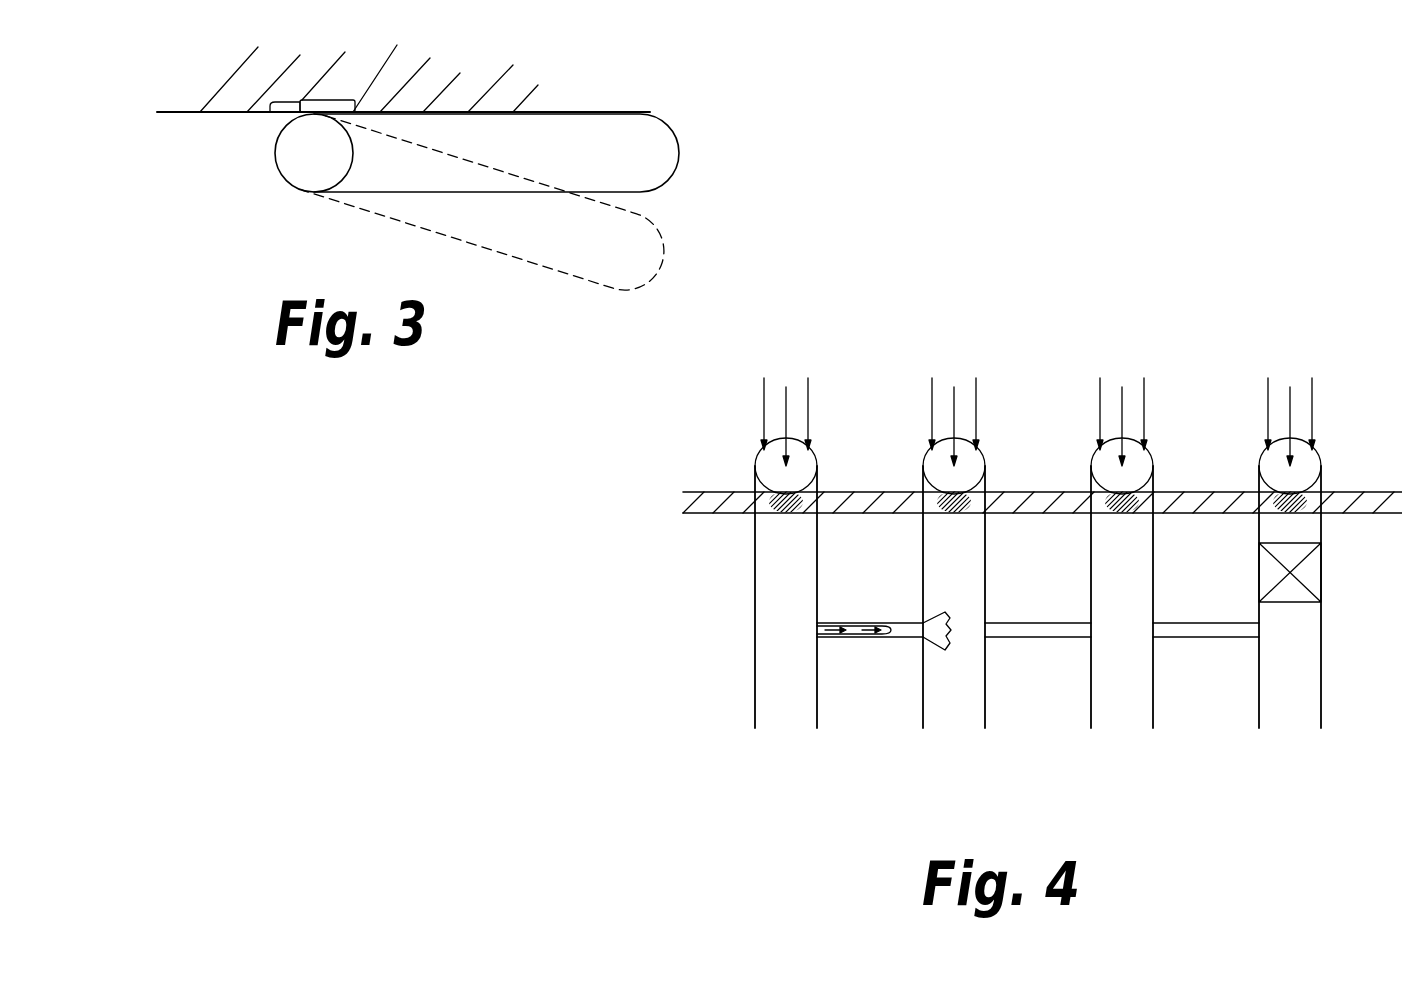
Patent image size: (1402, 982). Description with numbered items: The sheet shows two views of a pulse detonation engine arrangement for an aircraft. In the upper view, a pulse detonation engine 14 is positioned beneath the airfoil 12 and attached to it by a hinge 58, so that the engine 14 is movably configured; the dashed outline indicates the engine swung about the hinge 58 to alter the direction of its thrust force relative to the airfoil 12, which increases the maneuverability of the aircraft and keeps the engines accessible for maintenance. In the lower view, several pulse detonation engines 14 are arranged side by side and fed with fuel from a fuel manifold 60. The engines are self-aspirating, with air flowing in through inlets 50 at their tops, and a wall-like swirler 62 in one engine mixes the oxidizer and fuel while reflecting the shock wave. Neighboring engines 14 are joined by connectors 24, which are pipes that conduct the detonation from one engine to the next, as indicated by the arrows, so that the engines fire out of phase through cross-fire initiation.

In FIG. 3, the airfoil 12 is at (223, 112).
In FIG. 3, the hinge 58 is at (268, 112).
In FIG. 3, the pulse detonation engine 14 is at (678, 168).
In FIG. 4, the pulse detonation engine 14 is at (1285, 720).
In FIG. 4, the fuel manifold 60 is at (712, 516).
In FIG. 4, the inlet 50 is at (1312, 468).
In FIG. 4, the swirler 62 is at (1303, 582).
In FIG. 4, the connector 24 is at (845, 624).